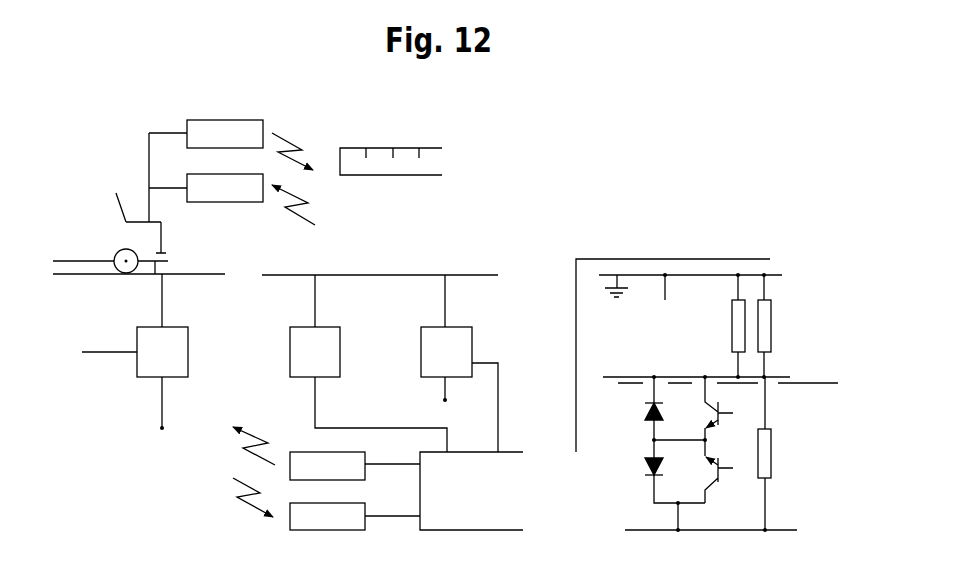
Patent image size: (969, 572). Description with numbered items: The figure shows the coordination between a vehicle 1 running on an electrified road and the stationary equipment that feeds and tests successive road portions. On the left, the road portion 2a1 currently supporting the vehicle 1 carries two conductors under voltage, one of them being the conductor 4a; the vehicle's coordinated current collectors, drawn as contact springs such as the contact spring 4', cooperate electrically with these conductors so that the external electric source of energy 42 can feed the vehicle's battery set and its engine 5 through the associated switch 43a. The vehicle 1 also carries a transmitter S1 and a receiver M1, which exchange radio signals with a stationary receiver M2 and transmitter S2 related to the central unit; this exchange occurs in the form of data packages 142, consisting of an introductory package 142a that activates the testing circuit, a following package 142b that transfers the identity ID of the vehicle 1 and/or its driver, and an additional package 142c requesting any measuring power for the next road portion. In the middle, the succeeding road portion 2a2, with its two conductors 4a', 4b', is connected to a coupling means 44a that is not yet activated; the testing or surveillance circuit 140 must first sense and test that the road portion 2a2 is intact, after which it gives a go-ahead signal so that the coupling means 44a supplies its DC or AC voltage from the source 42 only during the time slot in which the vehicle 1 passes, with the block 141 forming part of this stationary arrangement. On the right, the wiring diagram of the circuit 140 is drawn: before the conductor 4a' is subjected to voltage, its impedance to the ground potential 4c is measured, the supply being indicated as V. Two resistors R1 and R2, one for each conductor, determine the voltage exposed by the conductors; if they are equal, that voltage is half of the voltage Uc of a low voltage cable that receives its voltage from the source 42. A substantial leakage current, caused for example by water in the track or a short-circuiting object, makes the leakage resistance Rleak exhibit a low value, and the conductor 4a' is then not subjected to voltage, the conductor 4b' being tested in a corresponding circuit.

The vehicle 1 is at (122, 223).
The engine 5 is at (110, 255).
The contact spring 4' is at (189, 263).
The conductor 4a is at (139, 289).
The road portion 2a1 is at (60, 278).
The switch 43a is at (155, 352).
The external electric source of energy 42 is at (462, 397).
The transmitter S1 is at (206, 161).
The receiver M1 is at (225, 204).
The data packages 142 is at (417, 153).
The introductory package 142a is at (360, 148).
The following package 142b is at (383, 176).
The additional package 142c is at (413, 148).
The identity ID is at (386, 86).
The conductor 4a' is at (521, 315).
The conductor 4b' is at (730, 400).
The road portion 2a2 is at (383, 277).
The testing or surveillance circuit 140 is at (341, 368).
The coupling means 44a is at (466, 363).
The control circuit 141 is at (488, 530).
The transmitter S2 is at (355, 474).
The receiver M2 is at (353, 532).
The ground potential 4c is at (777, 275).
The supply voltage V is at (663, 301).
The resistor R2 is at (721, 325).
The leakage resistor Rleak is at (794, 325).
The resistor R1 is at (779, 453).
The low voltage cable voltage Uc is at (801, 519).